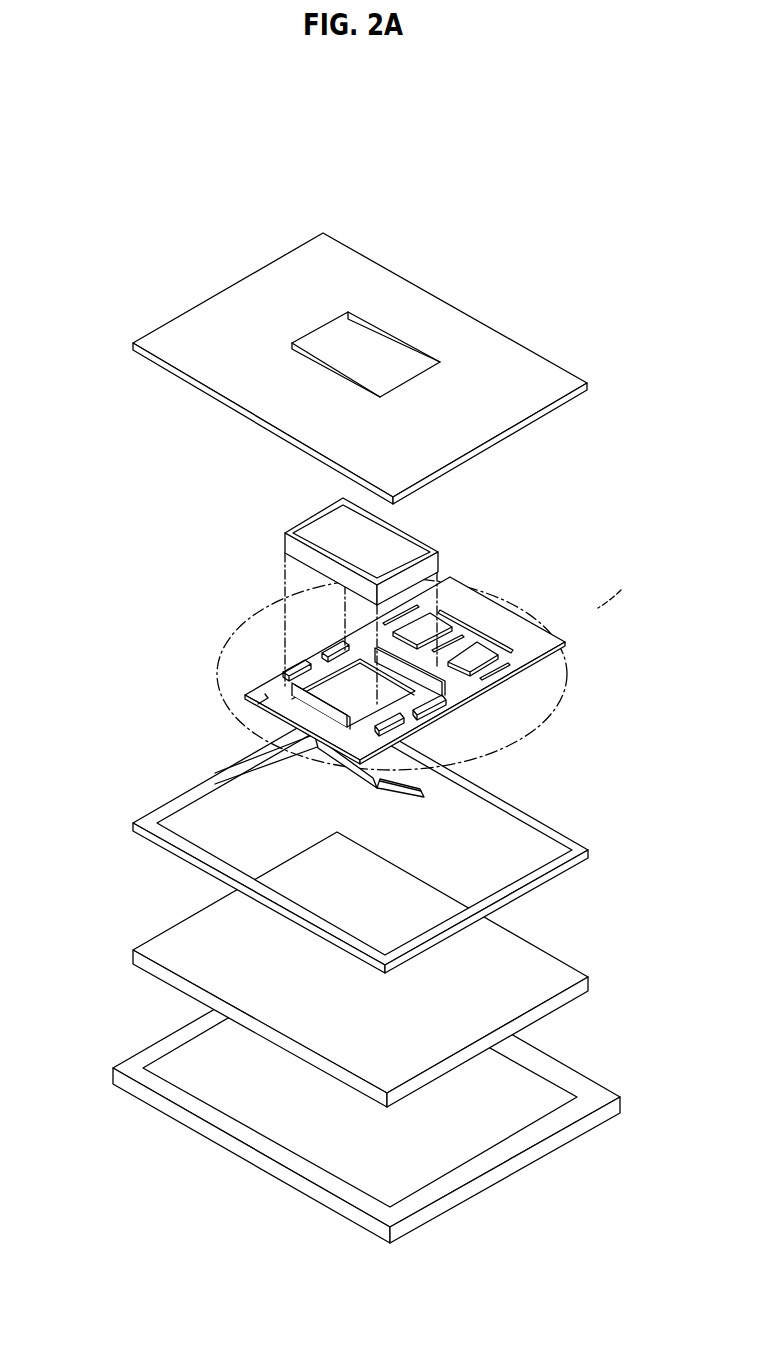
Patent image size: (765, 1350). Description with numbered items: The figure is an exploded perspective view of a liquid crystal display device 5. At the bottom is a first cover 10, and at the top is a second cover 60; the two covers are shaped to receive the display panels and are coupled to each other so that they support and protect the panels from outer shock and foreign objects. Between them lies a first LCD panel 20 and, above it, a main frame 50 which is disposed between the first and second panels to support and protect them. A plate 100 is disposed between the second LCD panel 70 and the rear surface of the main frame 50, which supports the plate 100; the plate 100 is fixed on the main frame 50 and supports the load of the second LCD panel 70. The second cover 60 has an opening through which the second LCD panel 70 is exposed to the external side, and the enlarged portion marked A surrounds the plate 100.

The LCD device 5 is at (75, 143).
The first cover 10 is at (567, 1115).
The first LCD panel 20 is at (555, 985).
The main frame 50 is at (547, 868).
The second cover 60 is at (523, 400).
The second LCD panel 70 is at (333, 533).
The plate 100 is at (497, 607).